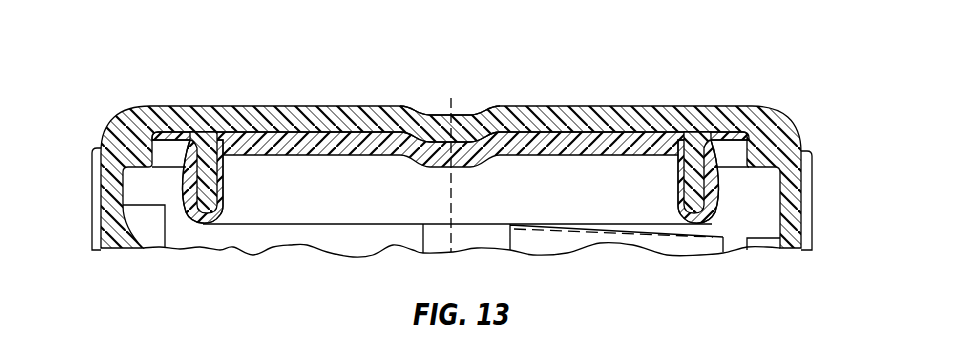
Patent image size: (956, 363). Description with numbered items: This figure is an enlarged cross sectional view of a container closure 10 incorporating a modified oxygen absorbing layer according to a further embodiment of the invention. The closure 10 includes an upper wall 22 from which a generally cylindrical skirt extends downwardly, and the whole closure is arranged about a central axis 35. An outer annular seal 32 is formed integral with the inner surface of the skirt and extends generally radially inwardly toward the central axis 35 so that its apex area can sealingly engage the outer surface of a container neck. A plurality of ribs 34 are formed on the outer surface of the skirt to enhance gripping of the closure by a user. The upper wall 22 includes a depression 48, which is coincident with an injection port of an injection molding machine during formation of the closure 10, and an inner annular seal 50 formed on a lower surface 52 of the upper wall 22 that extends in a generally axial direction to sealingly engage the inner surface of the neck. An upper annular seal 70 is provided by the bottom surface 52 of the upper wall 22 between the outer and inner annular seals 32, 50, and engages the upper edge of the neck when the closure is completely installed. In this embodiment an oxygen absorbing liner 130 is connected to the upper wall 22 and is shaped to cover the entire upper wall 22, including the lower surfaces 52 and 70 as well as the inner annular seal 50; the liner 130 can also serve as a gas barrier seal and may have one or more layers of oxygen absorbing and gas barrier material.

The closure 10 is at (462, 158).
The upper wall 22 is at (627, 112).
The outer annular seal 32 is at (168, 152).
The ribs 34 is at (95, 160).
The central axis 35 is at (453, 185).
The depression 48 is at (465, 113).
The inner annular seal 50 is at (332, 172).
The lower surface 52 is at (253, 122).
The upper annular seal 70 is at (728, 133).
The oxygen absorbing liner 130 is at (527, 143).